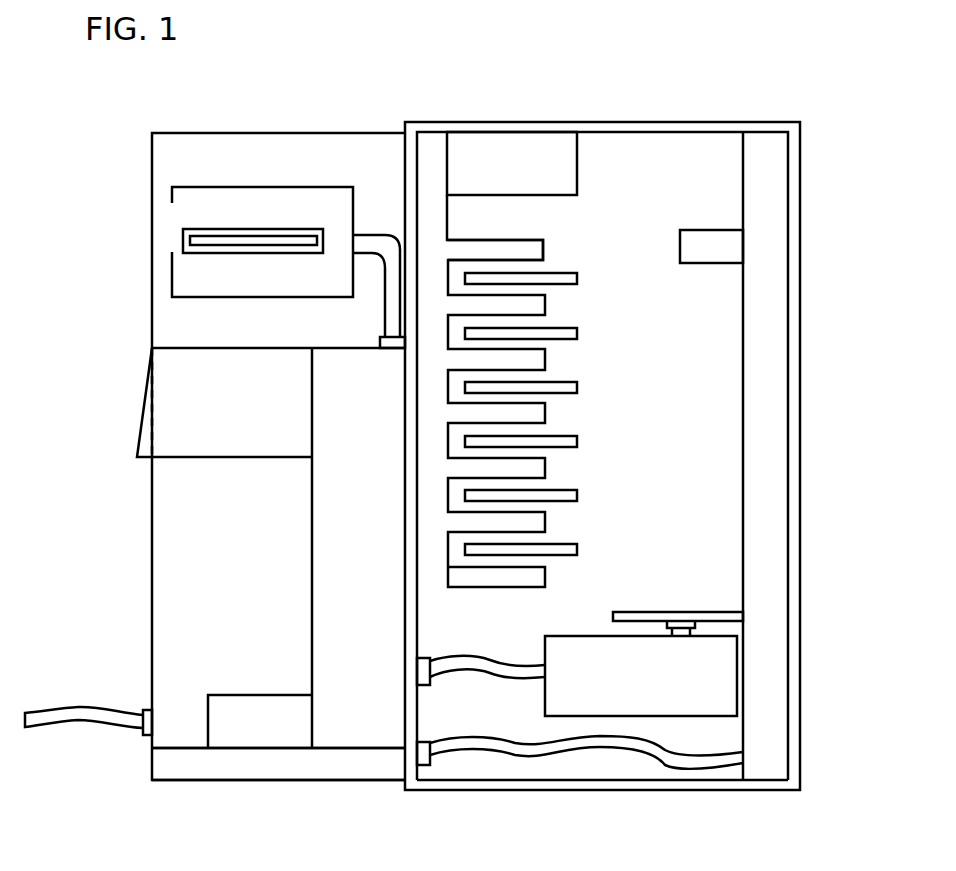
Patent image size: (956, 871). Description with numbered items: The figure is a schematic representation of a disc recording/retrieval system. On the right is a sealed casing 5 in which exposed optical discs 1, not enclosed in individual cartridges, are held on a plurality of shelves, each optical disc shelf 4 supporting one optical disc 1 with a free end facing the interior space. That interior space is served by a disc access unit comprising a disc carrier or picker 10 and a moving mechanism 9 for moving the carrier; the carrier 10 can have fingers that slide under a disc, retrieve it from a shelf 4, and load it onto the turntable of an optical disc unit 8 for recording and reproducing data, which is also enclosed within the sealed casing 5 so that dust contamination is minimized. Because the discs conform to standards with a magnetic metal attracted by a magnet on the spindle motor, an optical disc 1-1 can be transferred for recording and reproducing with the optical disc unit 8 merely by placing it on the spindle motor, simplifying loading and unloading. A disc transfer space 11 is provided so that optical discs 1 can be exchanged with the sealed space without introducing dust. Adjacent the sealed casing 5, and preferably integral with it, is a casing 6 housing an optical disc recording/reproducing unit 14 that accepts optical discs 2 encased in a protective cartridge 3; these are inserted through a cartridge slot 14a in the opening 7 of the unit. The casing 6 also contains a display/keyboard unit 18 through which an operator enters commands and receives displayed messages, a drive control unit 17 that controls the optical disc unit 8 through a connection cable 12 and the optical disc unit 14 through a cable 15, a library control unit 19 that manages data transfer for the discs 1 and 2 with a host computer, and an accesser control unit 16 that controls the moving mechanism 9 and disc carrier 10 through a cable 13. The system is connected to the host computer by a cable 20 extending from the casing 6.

The optical disc 1 is at (577, 440).
The optical disc 1-1 is at (698, 612).
The optical disc 2 is at (260, 235).
The cartridge 3 is at (220, 235).
The optical disc shelf 4 is at (495, 240).
The sealed casing 5 is at (800, 232).
The casing 6 is at (187, 132).
The opening 7 is at (170, 243).
The optical disc unit 8 is at (718, 677).
The moving mechanism 9 is at (767, 382).
The disc carrier 10 is at (707, 238).
The disc transfer space 11 is at (555, 153).
The connection cable 12 is at (478, 670).
The cable 13 is at (617, 748).
The optical disc recording/reproducing unit 14 is at (313, 187).
The cartridge slot 14a is at (165, 212).
The cable 15 is at (373, 235).
The accesser control unit 16 is at (245, 772).
The drive control unit 17 is at (350, 550).
The display/keyboard unit 18 is at (150, 410).
The library control unit 19 is at (245, 642).
The cable 20 is at (92, 728).